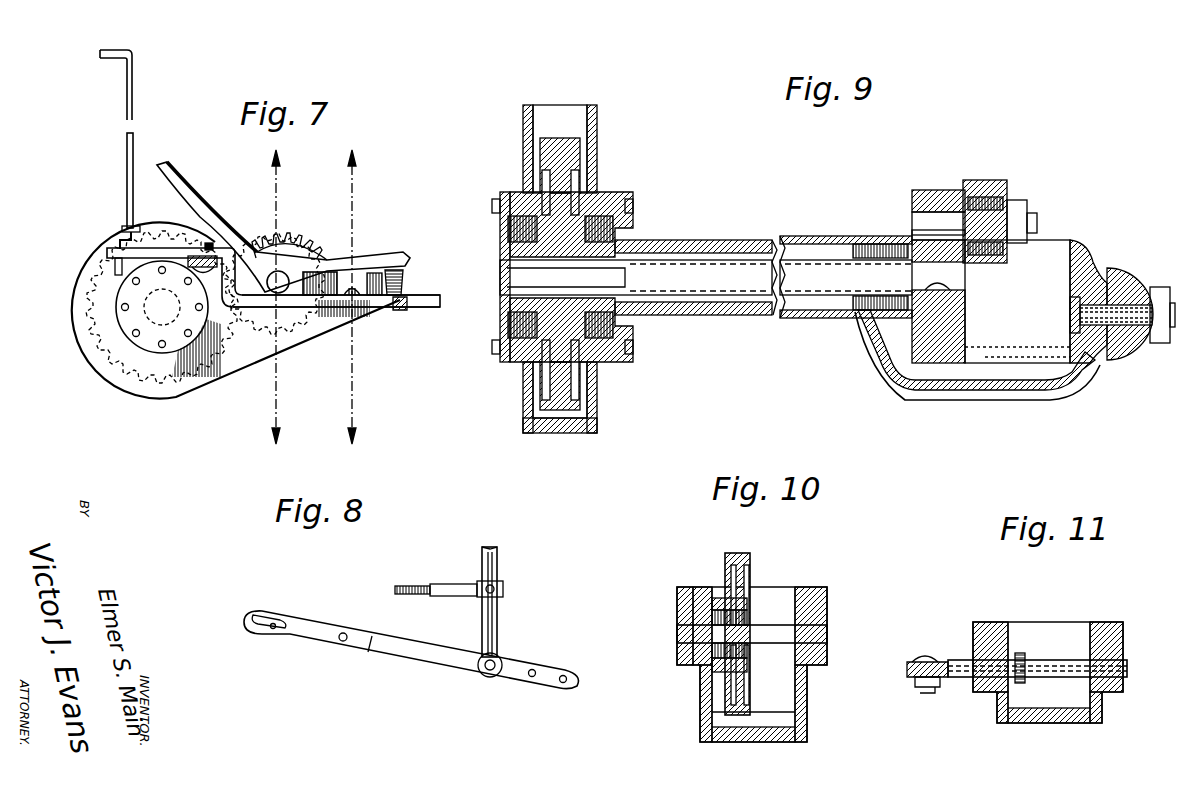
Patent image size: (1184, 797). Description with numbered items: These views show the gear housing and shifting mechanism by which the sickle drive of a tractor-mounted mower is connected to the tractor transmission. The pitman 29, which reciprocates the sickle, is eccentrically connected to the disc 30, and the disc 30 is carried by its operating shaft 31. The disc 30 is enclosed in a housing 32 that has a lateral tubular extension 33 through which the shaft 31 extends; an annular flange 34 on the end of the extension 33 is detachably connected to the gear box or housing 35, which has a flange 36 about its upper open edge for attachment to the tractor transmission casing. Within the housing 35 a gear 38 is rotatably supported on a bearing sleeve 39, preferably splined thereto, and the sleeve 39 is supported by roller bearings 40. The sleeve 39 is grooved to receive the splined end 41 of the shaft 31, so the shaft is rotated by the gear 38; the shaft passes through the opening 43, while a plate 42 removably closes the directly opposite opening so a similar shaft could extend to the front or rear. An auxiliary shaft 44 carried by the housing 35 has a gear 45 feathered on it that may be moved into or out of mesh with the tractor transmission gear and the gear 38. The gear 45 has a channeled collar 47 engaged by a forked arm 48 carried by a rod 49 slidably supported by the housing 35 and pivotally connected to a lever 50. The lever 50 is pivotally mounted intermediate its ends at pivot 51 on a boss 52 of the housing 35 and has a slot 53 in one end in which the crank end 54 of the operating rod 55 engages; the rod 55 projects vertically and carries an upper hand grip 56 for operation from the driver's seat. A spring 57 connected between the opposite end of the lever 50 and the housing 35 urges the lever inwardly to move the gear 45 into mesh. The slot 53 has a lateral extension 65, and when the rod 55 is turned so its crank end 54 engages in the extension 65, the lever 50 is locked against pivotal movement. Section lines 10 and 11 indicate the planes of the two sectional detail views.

In FIG. 7, the section line 10- 10 is at (290, 298).
In FIG. 7, the section line 11- 11 is at (366, 298).
In FIG. 9, the pitman 29 is at (985, 182).
In FIG. 9, the disc 30 is at (1070, 301).
In FIG. 9, the operating shaft 31 is at (705, 255).
In FIG. 9, the housing 32 is at (940, 392).
In FIG. 9, the lateral tubular extension 33 is at (750, 240).
In FIG. 9, the annular flange 34 is at (625, 193).
In FIG. 7, the gear box or housing 35 is at (252, 352).
In FIG. 9, the gear box or housing 35 is at (597, 112).
In FIG. 10, the gear box or housing 35 is at (810, 688).
In FIG. 11, the gear box or housing 35 is at (1123, 630).
In FIG. 7, the flange 36 is at (188, 192).
In FIG. 7, the gear 38 is at (190, 392).
In FIG. 9, the gear 38 is at (585, 150).
In FIG. 9, the bearing sleeve 39 is at (500, 248).
In FIG. 9, the roller bearings 40 is at (600, 228).
In FIG. 9, the splined end 41 is at (525, 276).
In FIG. 7, the plate 42 is at (150, 340).
In FIG. 9, the plate 42 is at (500, 320).
In FIG. 9, the opening 43 is at (612, 360).
In FIG. 7, the auxiliary shaft 44 is at (285, 292).
In FIG. 10, the auxiliary shaft 44 is at (780, 628).
In FIG. 7, the gear 45 is at (295, 238).
In FIG. 10, the gear 45 is at (750, 568).
In FIG. 10, the channeled collar 47 is at (700, 665).
In FIG. 8, the forked arm 48 is at (445, 583).
In FIG. 10, the forked arm 48 is at (720, 598).
In FIG. 11, the forked arm 48 is at (1022, 655).
In FIG. 7, the rod 49 is at (353, 288).
In FIG. 8, the rod 49 is at (500, 612).
In FIG. 11, the rod 49 is at (1048, 675).
In FIG. 7, the lever 50 is at (380, 307).
In FIG. 8, the lever 50 is at (425, 658).
In FIG. 11, the lever 50 is at (940, 680).
In FIG. 7, the pivot 51 is at (208, 247).
In FIG. 8, the pivot 51 is at (343, 642).
In FIG. 7, the boss 52 is at (215, 260).
In FIG. 8, the slot 53 is at (272, 632).
In FIG. 7, the crank end 54 is at (110, 254).
In FIG. 7, the operating rod 55 is at (125, 185).
In FIG. 7, the hand grip 56 is at (115, 52).
In FIG. 7, the spring 57 is at (405, 278).
In FIG. 8, the lateral extension 65 is at (262, 610).